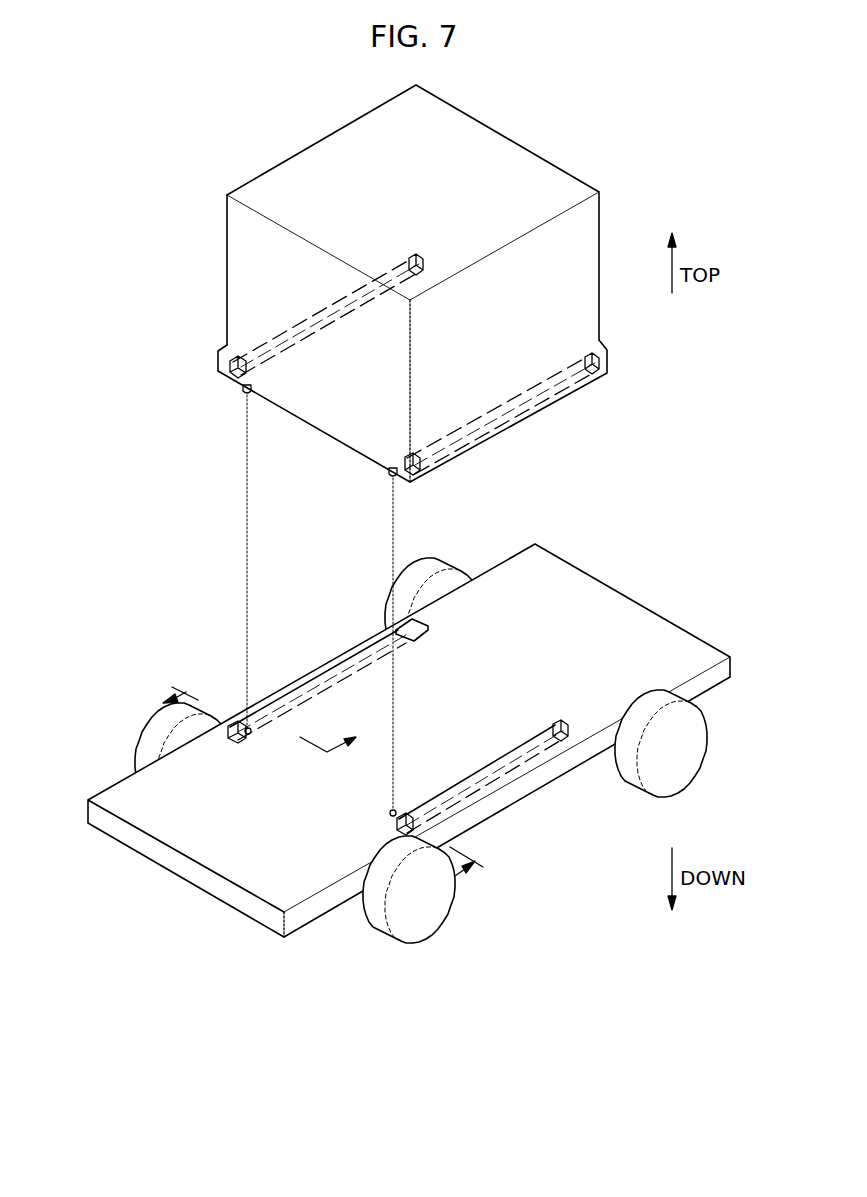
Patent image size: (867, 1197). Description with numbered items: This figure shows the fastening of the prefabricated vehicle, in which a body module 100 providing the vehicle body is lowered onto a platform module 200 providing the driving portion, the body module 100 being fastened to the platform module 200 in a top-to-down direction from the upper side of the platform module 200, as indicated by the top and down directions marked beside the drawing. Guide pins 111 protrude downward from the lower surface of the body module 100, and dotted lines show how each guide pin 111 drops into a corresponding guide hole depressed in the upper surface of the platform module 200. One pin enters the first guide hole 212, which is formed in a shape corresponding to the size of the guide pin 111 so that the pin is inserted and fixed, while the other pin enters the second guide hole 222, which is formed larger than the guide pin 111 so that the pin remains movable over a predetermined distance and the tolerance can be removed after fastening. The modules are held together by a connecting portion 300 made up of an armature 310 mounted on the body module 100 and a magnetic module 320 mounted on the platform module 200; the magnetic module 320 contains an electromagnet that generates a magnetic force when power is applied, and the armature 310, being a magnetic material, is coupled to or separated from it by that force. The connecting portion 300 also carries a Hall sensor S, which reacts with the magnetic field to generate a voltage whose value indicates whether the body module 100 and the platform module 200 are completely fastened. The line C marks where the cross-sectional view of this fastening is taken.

The body module 100 is at (242, 283).
The guide pin 111 is at (245, 388).
The platform module 200 is at (157, 855).
The first guide hole 212 is at (245, 725).
The second guide hole 222 is at (388, 815).
The connecting portion 300 is at (653, 442).
The armature 310 is at (567, 387).
The magnetic module 320 is at (557, 725).
The Hall sensor S is at (395, 622).
The line C- C is at (313, 790).